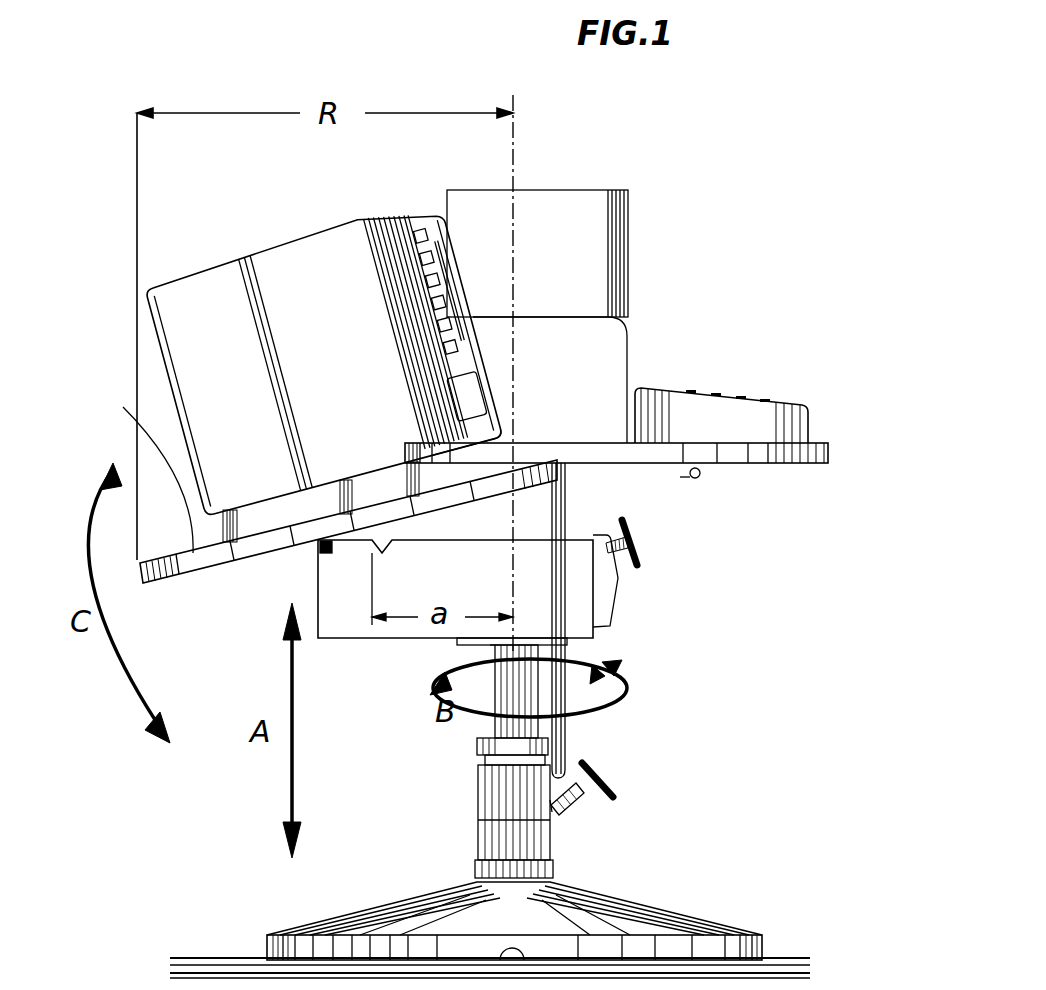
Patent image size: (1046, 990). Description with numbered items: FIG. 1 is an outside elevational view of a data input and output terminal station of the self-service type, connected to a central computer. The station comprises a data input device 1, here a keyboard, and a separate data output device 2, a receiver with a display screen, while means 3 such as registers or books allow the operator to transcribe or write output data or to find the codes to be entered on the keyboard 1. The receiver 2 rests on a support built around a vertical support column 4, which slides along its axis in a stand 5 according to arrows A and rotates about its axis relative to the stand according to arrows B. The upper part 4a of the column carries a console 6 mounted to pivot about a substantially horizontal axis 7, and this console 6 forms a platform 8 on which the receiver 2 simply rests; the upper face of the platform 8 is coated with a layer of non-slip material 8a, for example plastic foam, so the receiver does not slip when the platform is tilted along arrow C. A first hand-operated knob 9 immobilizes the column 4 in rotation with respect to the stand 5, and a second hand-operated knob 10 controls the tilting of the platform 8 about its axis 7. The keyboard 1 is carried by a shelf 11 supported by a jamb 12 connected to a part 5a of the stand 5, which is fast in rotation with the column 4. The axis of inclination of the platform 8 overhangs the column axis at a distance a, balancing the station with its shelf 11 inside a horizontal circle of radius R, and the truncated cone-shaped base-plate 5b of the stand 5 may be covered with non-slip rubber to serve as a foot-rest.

The data input device 1 is at (693, 418).
The data output device 2 is at (334, 353).
The means for transcribing or writing output data 3 is at (575, 267).
The support column 4 is at (517, 692).
The upper part of the support column 4a is at (490, 650).
The stand 5 is at (531, 907).
The part of the stand 5a is at (495, 788).
The base-plate 5b is at (685, 922).
The console 6 is at (272, 558).
The horizontal axis 7 is at (385, 550).
The platform 8 is at (177, 572).
The layer of non-slip material 8a is at (135, 476).
The first knob 9 is at (600, 780).
The second knob 10 is at (626, 543).
The shelf 11 is at (743, 453).
The jamb 12 is at (565, 647).